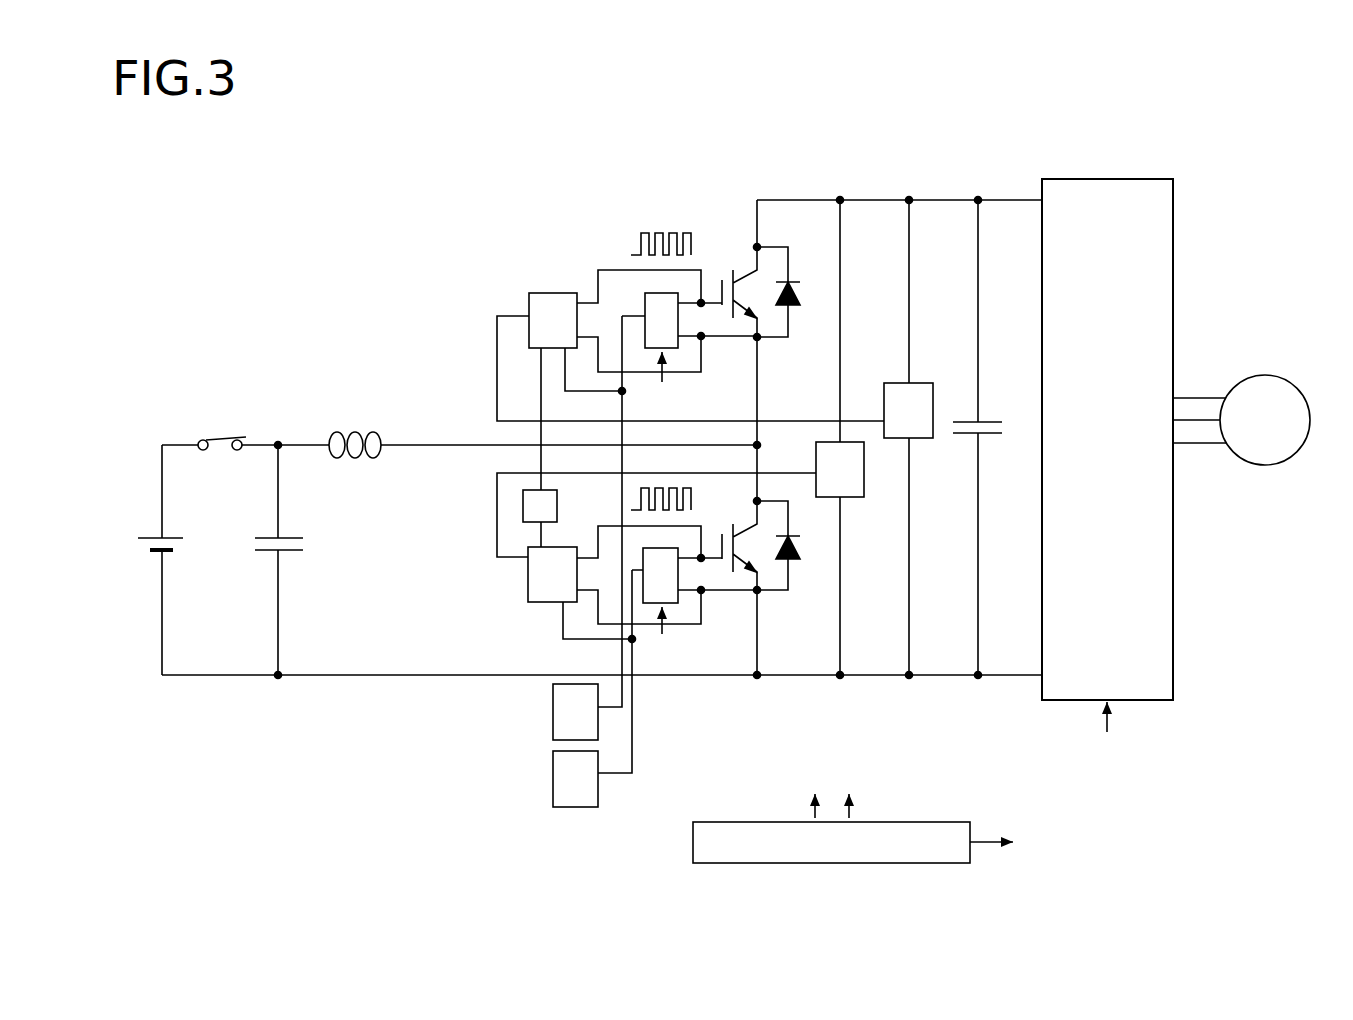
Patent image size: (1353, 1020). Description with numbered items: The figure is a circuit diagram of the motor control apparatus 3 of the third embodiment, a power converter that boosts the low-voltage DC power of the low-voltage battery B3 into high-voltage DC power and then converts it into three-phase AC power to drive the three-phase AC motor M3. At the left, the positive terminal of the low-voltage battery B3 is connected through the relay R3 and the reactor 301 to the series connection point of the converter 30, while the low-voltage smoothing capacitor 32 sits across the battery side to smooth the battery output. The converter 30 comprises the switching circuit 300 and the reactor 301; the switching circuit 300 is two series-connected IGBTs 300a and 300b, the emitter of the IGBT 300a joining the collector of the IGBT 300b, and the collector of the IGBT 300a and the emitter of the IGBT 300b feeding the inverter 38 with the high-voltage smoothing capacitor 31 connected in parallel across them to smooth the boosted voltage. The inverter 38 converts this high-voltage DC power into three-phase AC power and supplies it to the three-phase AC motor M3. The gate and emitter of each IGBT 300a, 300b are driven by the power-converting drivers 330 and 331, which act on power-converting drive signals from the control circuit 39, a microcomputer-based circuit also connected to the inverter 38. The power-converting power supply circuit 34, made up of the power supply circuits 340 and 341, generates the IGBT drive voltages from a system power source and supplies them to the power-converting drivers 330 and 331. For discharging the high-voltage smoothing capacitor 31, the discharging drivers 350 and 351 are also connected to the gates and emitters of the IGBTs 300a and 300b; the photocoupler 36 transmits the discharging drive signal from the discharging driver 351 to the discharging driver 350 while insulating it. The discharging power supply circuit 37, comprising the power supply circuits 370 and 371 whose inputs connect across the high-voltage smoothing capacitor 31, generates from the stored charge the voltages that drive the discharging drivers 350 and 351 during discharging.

The motor control apparatus 3 is at (876, 102).
The converter 30 is at (665, 445).
The switching circuit 300 is at (751, 410).
The IGBT 300a is at (727, 320).
The IGBT 300b is at (727, 574).
The reactor 301 is at (345, 427).
The high-voltage smoothing capacitor 31 is at (990, 418).
The low-voltage smoothing capacitor 32 is at (265, 533).
The power-converting driver 330 is at (653, 303).
The power-converting driver 331 is at (653, 563).
The power-converting power supply circuit 34 is at (511, 745).
The power supply circuit 340 is at (563, 705).
The power supply circuit 341 is at (563, 775).
The discharging driver 350 is at (555, 300).
The discharging driver 351 is at (535, 582).
The photocoupler 36 is at (523, 505).
The discharging power supply circuit 37 is at (887, 404).
The power supply circuit 370 is at (918, 388).
The power supply circuit 371 is at (850, 487).
The inverter 38 is at (1103, 185).
The control circuit 39 is at (957, 837).
The low-voltage battery B3 is at (147, 533).
The relay R3 is at (222, 432).
The three-phase AC motor M3 is at (1263, 382).